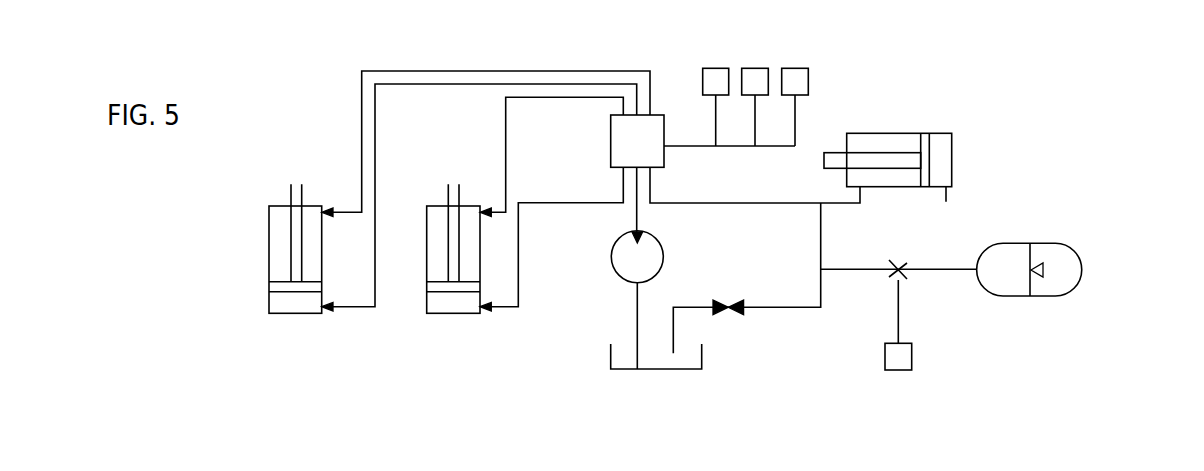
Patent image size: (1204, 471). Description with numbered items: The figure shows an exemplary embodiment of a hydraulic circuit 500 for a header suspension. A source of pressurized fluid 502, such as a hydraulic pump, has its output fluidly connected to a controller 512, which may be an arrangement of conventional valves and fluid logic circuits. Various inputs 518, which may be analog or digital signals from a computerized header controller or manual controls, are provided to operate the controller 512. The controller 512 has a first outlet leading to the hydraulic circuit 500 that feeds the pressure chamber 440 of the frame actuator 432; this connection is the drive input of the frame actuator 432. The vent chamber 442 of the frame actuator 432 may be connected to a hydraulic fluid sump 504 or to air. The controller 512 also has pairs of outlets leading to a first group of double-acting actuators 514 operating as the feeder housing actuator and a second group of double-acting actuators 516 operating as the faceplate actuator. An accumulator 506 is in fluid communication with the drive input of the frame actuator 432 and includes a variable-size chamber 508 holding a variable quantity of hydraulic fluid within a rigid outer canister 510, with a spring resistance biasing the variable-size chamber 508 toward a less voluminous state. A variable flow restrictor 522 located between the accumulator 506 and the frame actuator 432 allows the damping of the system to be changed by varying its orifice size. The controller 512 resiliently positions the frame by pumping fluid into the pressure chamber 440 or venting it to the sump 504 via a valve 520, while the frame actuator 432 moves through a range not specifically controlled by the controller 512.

The frame actuator 432 is at (953, 166).
The pressure chamber 440 is at (868, 140).
The vent chamber 442 is at (945, 148).
The hydraulic circuit 500 is at (781, 206).
The source of pressurized fluid 502 is at (625, 262).
The hydraulic fluid sump 504 is at (703, 360).
The accumulator 506 is at (1050, 243).
The variable-size chamber 508 is at (1002, 282).
The rigid outer canister 510 is at (1055, 296).
The controller 512 is at (657, 125).
The double-acting actuators 514 is at (452, 313).
The double-acting actuators 516 is at (295, 313).
The inputs 518 is at (712, 68).
The valve 520 is at (732, 300).
The variable flow restrictor 522 is at (903, 260).